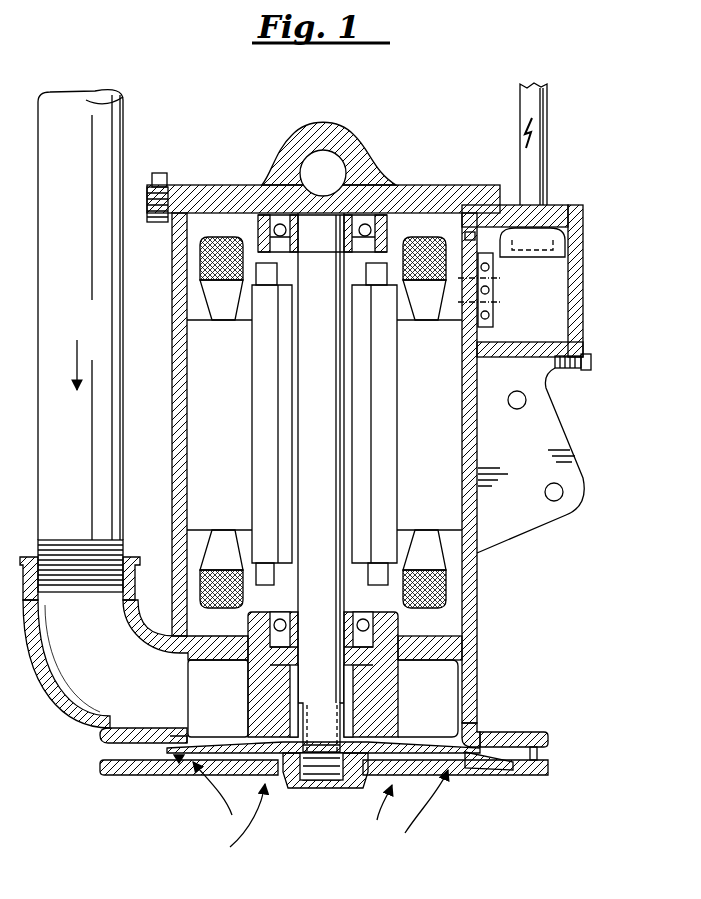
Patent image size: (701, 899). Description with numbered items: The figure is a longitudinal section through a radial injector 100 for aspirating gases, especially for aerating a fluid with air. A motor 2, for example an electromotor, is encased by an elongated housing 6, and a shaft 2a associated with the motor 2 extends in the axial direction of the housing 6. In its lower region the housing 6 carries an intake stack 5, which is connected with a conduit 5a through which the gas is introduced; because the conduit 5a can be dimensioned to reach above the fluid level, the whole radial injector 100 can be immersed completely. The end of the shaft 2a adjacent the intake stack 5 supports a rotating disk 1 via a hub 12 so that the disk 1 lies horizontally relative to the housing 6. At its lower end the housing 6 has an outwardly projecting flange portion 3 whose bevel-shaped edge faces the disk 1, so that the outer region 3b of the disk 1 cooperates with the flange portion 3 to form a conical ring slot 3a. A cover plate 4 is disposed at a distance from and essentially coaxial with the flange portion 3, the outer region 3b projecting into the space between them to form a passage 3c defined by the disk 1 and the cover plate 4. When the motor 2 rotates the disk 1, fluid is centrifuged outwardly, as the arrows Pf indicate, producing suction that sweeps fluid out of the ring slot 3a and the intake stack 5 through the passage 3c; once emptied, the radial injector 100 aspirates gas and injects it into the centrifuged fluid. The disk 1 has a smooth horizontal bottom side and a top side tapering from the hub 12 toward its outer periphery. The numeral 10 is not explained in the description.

The radial injector 100 is at (428, 98).
The rotating disk 1 is at (235, 761).
The motor 2 is at (433, 432).
The shaft 2a is at (338, 682).
The flange portion 3 is at (103, 738).
The ring slot 3a is at (188, 742).
The outer region 3b is at (470, 777).
The passage 3c is at (181, 763).
The cover plate 4 is at (515, 776).
The intake stack 5 is at (67, 700).
The conduit 5a is at (113, 124).
The housing 6 is at (481, 587).
The casing foot 10 is at (451, 740).
The hub 12 is at (359, 727).